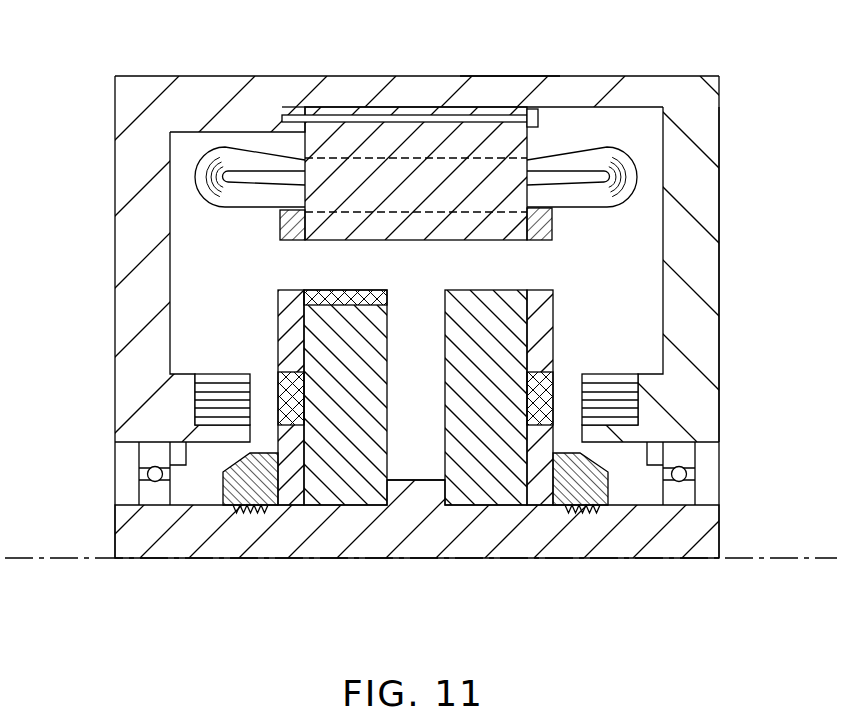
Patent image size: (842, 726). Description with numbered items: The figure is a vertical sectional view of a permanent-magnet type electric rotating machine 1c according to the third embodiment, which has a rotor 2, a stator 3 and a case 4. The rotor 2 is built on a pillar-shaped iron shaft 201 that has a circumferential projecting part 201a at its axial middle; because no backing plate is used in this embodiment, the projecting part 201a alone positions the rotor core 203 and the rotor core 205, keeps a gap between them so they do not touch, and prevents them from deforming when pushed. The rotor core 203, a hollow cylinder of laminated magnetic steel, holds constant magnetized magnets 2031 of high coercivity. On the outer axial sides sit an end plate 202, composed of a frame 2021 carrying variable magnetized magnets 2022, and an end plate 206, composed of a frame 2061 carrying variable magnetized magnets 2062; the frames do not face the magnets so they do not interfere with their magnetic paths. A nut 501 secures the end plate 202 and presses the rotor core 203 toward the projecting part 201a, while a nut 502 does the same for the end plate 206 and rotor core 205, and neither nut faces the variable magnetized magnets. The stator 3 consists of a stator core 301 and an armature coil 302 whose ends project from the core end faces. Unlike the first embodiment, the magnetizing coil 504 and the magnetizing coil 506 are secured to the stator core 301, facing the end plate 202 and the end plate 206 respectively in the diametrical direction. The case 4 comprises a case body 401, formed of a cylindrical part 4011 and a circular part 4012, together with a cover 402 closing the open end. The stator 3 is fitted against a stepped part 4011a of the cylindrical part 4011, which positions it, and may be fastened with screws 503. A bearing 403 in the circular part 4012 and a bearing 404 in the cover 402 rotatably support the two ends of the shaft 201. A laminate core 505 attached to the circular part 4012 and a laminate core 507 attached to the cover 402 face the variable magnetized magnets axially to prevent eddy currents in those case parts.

The permanent-magnet type electric rotating machine 1c is at (750, 70).
The rotor 2 is at (588, 558).
The stator 3 is at (388, 114).
The case 4 is at (505, 76).
The shaft 201 is at (170, 558).
The projecting part 201a is at (428, 490).
The end plate 202 is at (279, 290).
The frame 2021 is at (290, 316).
The variable magnetized magnets 2022 is at (282, 387).
The rotor core 203 is at (330, 500).
The constant magnetized magnets 2031 is at (367, 290).
The rotor core 205 is at (488, 487).
The end plate 206 is at (556, 290).
The frame 2061 is at (553, 305).
The variable magnetized magnets 2062 is at (553, 385).
The stator core 301 is at (443, 128).
The armature coil 302 is at (240, 207).
The case body 401 is at (49, 90).
The cylindrical part 4011 is at (270, 100).
The stepped part 4011a is at (292, 112).
The circular part 4012 is at (118, 165).
The cover 402 is at (713, 202).
The bearing 403 is at (147, 488).
The bearing 404 is at (691, 458).
The nut 501 is at (226, 488).
The nut 502 is at (608, 490).
The screws 503 is at (540, 119).
The magnetizing coil 504 is at (297, 240).
The laminate core 505 is at (207, 412).
The magnetizing coil 506 is at (552, 226).
The laminate core 507 is at (625, 408).